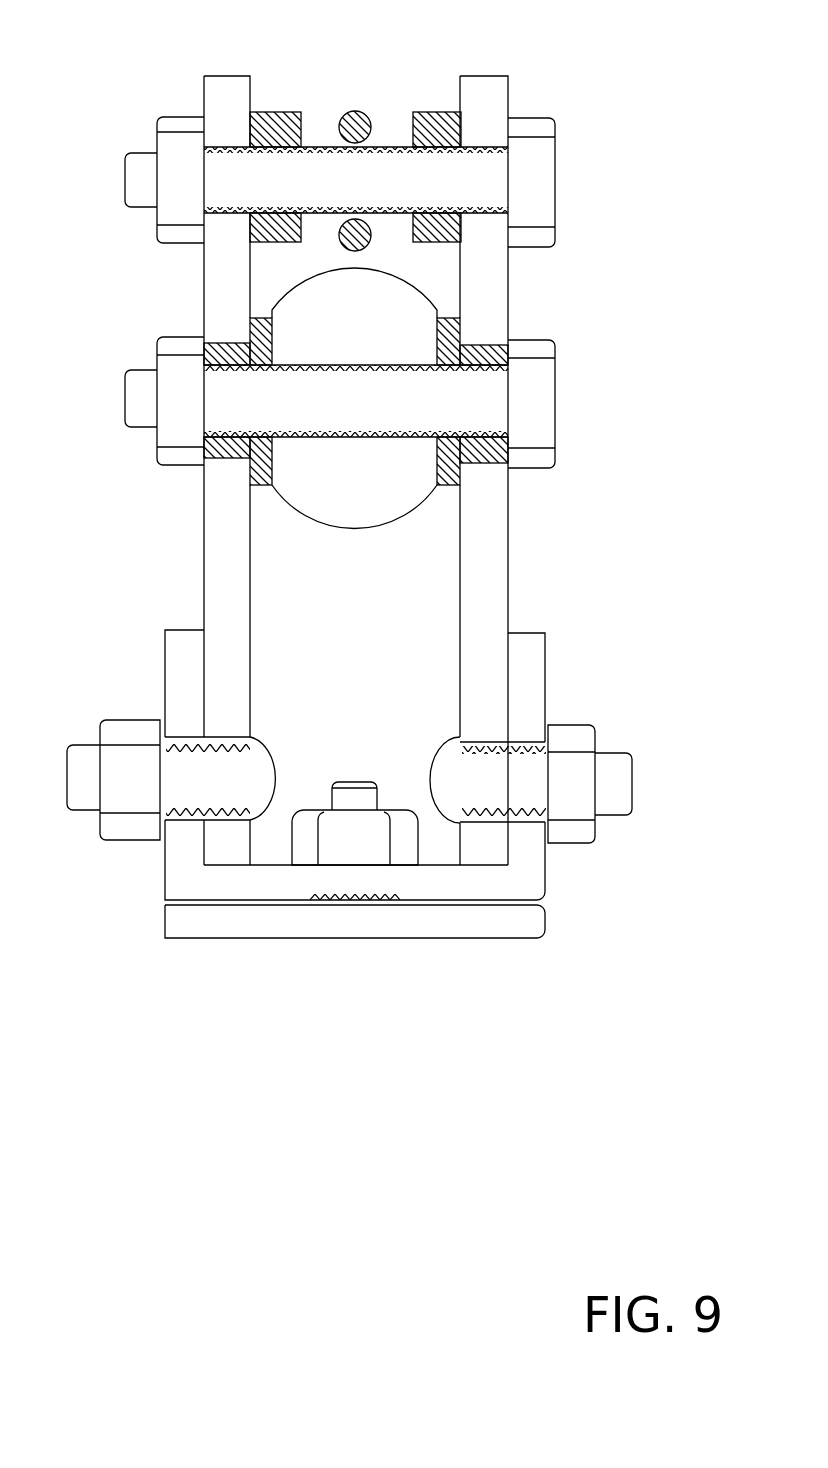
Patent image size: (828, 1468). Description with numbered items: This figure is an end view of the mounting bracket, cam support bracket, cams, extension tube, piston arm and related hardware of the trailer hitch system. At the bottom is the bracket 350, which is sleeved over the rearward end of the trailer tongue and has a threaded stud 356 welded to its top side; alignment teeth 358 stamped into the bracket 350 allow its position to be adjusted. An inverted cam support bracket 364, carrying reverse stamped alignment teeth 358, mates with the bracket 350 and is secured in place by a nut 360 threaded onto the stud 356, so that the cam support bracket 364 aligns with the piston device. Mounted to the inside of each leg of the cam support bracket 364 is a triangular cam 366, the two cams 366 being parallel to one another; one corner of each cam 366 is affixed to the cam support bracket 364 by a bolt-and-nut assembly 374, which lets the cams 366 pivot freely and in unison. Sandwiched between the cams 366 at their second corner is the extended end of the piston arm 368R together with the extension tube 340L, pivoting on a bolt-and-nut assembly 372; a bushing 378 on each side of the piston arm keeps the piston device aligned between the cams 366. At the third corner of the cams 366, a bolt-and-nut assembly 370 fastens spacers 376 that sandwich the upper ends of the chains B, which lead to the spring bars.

The extension tube 340L is at (327, 500).
The piston arm 368R is at (355, 473).
The bracket 350 is at (210, 922).
The threaded stud 356 is at (350, 785).
The alignment teeth 358 is at (375, 905).
The nut 360 is at (308, 843).
The cam support bracket 364 is at (527, 703).
The cam 366 is at (483, 297).
The bolt-and-nut assembly 370 is at (540, 170).
The bolt-and-nut assembly 372 is at (538, 403).
The bolt-and-nut assembly 374 is at (130, 828).
The spacer 376 is at (437, 112).
The bushing 378 is at (240, 350).
The chain B is at (345, 242).